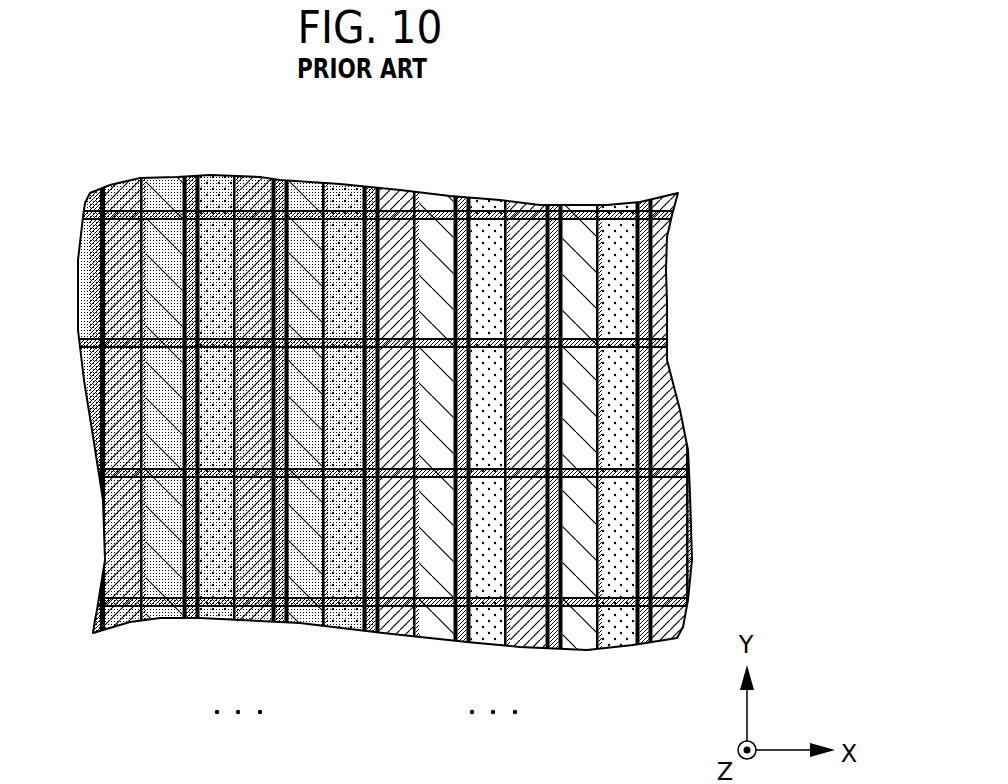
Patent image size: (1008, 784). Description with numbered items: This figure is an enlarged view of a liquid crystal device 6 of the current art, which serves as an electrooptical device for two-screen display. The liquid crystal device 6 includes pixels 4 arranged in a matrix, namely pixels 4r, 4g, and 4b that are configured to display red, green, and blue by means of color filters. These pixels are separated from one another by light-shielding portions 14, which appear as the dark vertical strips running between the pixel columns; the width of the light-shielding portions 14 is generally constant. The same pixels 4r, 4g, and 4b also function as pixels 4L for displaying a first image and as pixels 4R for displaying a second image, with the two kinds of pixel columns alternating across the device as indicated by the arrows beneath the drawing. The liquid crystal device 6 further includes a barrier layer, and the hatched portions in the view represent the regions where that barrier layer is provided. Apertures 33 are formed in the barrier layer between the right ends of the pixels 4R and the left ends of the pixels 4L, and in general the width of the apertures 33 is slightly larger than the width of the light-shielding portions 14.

The pixels 4 is at (165, 363).
The red pixel 4r is at (120, 183).
The green pixel 4g is at (160, 186).
The blue pixel 4b is at (211, 387).
The pixels for displaying a first image 4L is at (351, 415).
The pixels for displaying a second image 4R is at (391, 415).
The liquid crystal device 6 is at (390, 362).
The light-shielding portions 14 is at (315, 190).
The apertures 33 is at (487, 252).